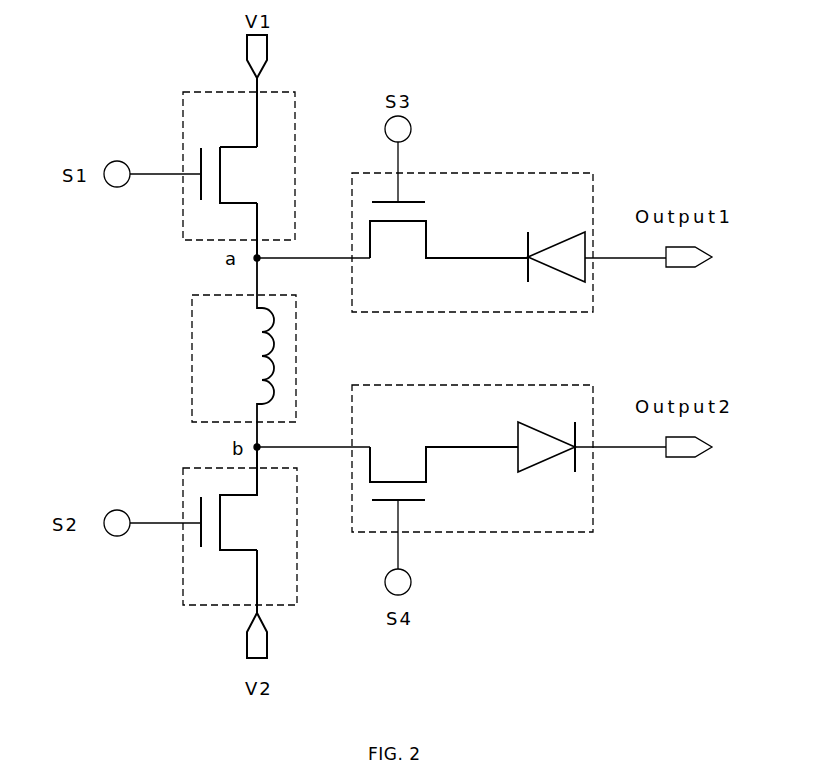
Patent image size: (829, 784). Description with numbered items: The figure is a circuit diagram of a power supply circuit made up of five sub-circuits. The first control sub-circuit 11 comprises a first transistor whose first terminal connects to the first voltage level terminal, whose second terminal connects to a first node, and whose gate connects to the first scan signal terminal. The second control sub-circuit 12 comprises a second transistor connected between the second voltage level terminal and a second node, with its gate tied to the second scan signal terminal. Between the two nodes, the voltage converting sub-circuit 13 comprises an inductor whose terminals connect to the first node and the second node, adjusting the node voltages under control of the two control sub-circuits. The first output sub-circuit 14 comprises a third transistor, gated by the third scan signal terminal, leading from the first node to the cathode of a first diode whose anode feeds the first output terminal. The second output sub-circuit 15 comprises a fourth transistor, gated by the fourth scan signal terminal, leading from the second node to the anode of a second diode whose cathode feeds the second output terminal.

The first control sub-circuit 11 is at (183, 117).
The second control sub-circuit 12 is at (183, 492).
The voltage converting sub-circuit 13 is at (192, 343).
The first output sub-circuit 14 is at (593, 290).
The second output sub-circuit 15 is at (593, 495).